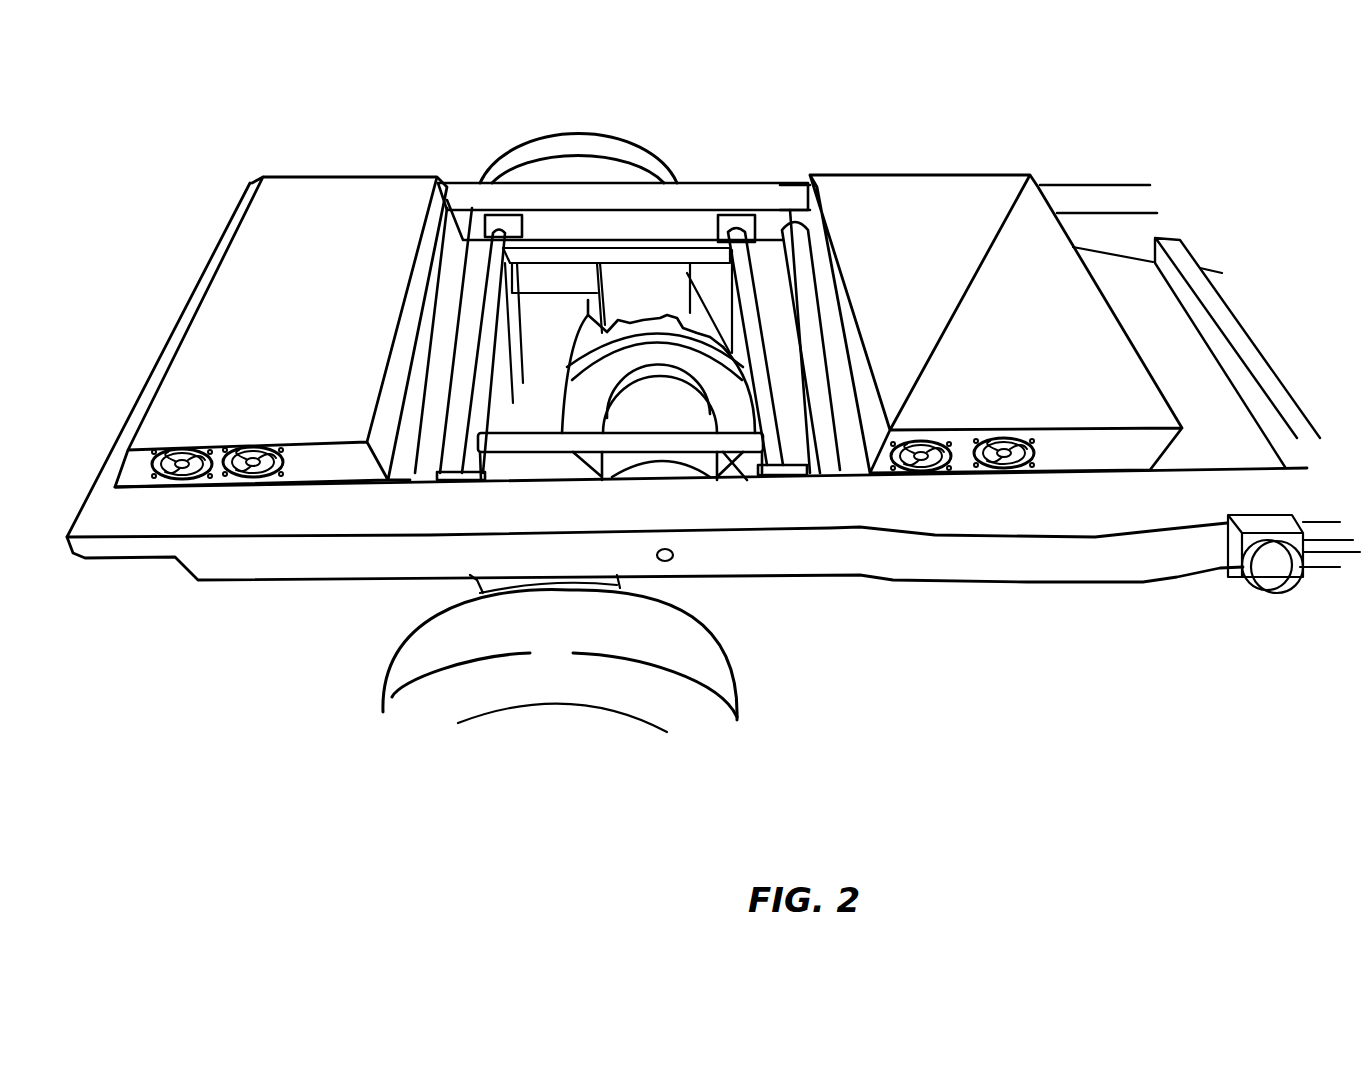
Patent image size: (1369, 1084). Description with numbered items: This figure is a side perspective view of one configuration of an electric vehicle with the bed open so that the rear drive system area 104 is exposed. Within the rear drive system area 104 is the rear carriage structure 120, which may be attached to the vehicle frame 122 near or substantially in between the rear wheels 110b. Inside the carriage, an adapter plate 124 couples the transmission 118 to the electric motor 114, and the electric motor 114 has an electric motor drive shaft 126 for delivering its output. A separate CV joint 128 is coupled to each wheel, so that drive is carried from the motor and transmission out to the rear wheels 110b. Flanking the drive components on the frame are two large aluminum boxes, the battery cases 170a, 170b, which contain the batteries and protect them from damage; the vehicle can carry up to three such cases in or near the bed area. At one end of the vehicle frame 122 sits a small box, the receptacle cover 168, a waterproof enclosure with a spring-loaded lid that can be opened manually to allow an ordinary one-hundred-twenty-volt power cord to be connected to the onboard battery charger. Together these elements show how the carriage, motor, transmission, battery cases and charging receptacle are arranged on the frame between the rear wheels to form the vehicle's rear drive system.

The rear drive system area 104 is at (525, 463).
The rear wheels 110b is at (518, 150).
The electric motor 114 is at (687, 418).
The transmission 118 is at (660, 288).
The rear carriage structure 120 is at (752, 308).
The vehicle frame 122 is at (140, 518).
The adapter plate 124 is at (713, 378).
The electric motor drive shaft 126 is at (668, 563).
The CV joint 128 is at (487, 590).
The receptacle cover 168 is at (1280, 580).
The battery case 170a is at (281, 332).
The battery case 170b is at (996, 324).